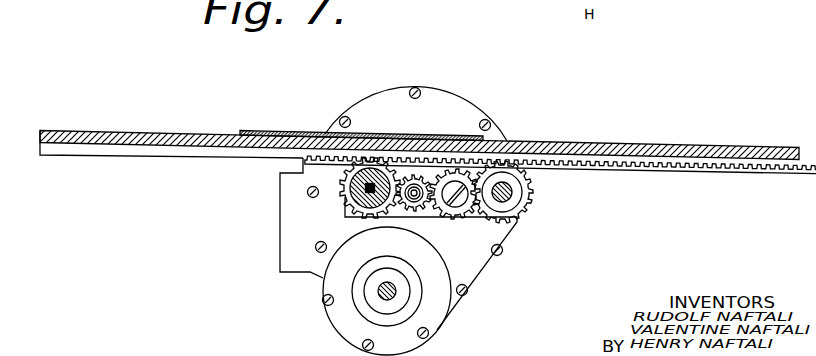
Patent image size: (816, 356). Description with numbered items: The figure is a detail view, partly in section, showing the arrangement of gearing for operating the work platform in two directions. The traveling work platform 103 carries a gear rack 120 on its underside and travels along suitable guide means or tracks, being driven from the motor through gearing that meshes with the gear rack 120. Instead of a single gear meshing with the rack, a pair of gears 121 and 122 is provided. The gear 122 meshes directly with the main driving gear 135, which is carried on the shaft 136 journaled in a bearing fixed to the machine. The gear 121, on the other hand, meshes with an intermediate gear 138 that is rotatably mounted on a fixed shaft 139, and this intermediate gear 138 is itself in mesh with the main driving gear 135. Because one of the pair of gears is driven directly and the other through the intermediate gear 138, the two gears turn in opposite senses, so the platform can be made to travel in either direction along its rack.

The traveling work platform 103 is at (699, 152).
The gear rack 120 is at (638, 170).
The gear 121 is at (518, 189).
The gear 122 is at (347, 193).
The main driving gear 135 is at (421, 183).
The shaft 136 is at (407, 182).
The intermediate gear 138 is at (466, 183).
The fixed shaft 139 is at (462, 220).